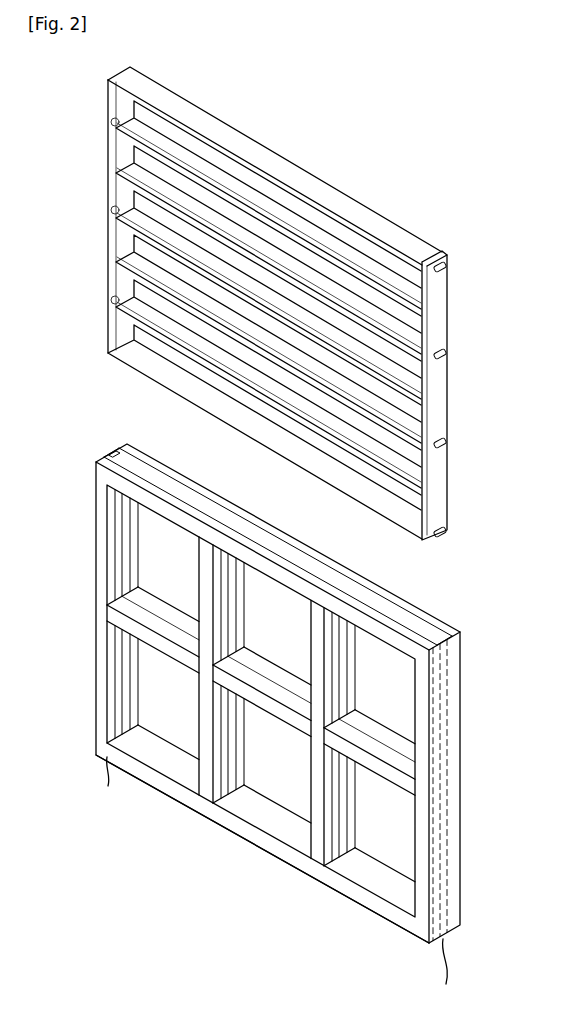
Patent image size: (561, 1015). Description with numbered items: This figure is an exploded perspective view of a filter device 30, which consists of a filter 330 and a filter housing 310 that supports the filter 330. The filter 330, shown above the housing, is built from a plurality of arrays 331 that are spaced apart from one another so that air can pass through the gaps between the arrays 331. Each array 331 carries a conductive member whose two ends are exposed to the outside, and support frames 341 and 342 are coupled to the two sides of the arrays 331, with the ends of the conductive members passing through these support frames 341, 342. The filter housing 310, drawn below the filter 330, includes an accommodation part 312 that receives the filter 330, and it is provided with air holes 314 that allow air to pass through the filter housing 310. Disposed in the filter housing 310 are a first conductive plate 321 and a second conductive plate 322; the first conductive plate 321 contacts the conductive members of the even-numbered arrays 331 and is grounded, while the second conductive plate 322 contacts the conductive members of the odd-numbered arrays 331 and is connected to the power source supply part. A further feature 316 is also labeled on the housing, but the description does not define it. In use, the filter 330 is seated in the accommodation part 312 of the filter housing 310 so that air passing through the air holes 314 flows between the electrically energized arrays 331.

The filter device 30 is at (70, 447).
The filter housing 310 is at (452, 714).
The accommodation part 312 is at (157, 466).
The air hole 314 is at (242, 836).
The transom bar 316 is at (404, 624).
The first conductive plate 321 is at (112, 457).
The second conductive plate 322 is at (433, 643).
The filter 330 is at (322, 112).
The array 331 is at (401, 224).
The support frame 341 is at (105, 156).
The support frame 342 is at (441, 315).